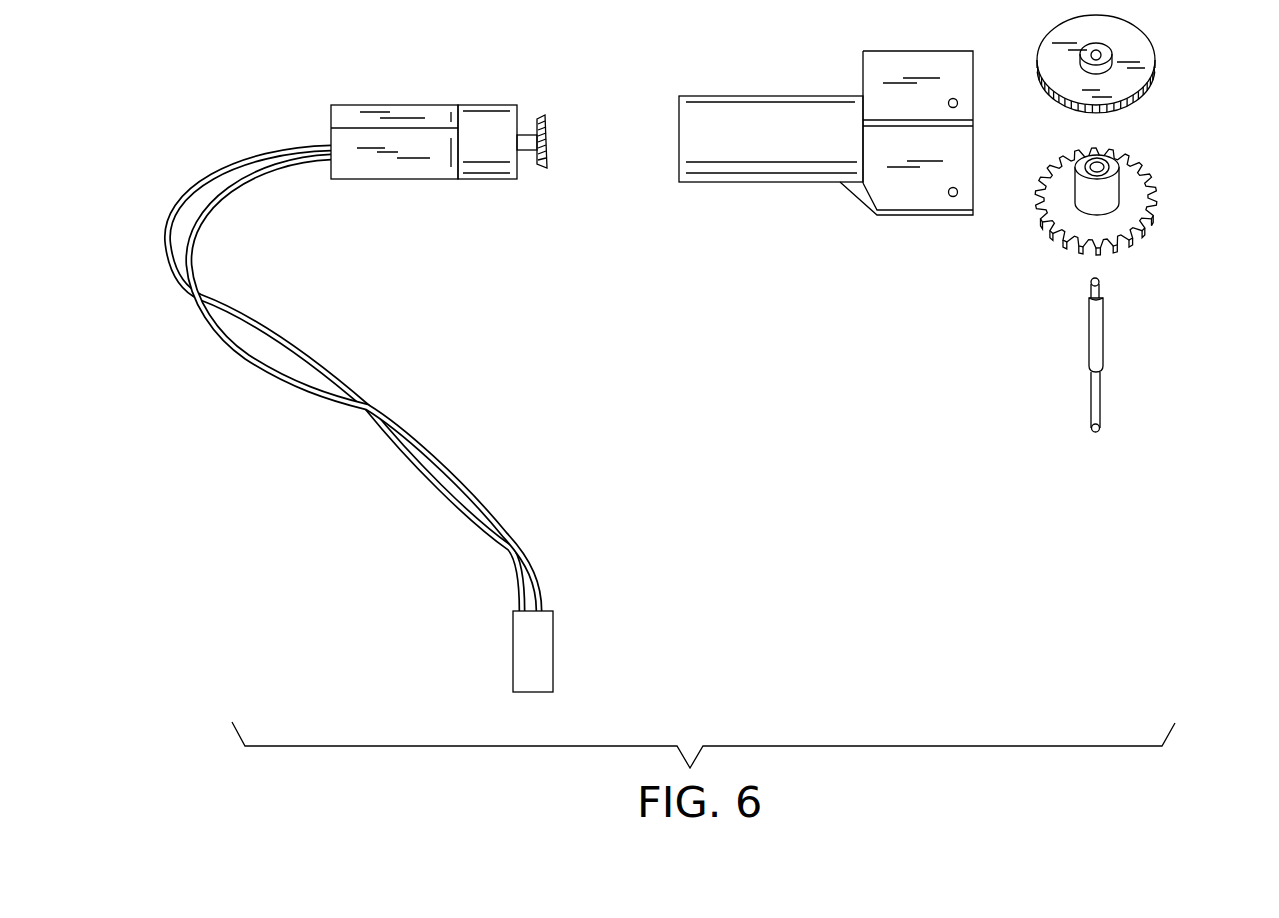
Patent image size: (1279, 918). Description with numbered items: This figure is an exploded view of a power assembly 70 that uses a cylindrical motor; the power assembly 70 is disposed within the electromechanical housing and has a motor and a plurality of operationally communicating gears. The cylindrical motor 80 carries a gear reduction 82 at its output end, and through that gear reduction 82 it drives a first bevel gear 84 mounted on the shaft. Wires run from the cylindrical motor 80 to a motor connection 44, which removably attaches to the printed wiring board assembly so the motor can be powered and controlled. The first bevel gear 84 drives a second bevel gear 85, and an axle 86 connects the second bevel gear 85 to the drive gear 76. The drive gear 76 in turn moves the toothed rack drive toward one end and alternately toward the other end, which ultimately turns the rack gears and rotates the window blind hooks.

The motor connection 44 is at (548, 651).
The power assembly 70 is at (857, 98).
The drive gear 76 is at (1127, 192).
The cylindrical motor 80 is at (404, 109).
The gear reduction 82 is at (490, 106).
The first bevel gear 84 is at (547, 165).
The second bevel gear 85 is at (1145, 62).
The axle 86 is at (1098, 337).